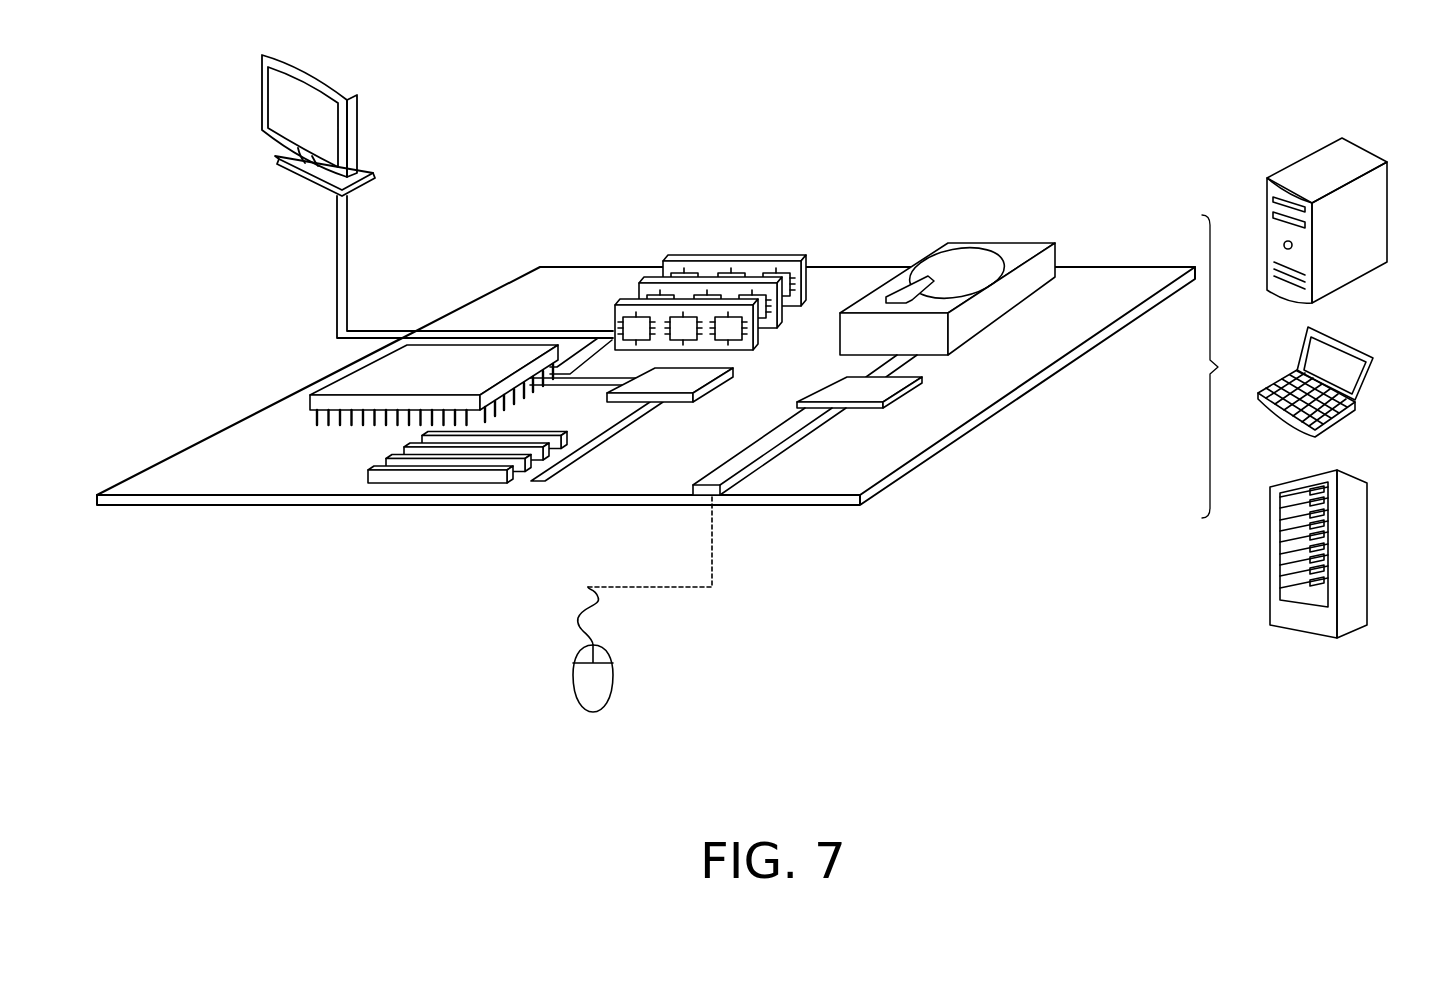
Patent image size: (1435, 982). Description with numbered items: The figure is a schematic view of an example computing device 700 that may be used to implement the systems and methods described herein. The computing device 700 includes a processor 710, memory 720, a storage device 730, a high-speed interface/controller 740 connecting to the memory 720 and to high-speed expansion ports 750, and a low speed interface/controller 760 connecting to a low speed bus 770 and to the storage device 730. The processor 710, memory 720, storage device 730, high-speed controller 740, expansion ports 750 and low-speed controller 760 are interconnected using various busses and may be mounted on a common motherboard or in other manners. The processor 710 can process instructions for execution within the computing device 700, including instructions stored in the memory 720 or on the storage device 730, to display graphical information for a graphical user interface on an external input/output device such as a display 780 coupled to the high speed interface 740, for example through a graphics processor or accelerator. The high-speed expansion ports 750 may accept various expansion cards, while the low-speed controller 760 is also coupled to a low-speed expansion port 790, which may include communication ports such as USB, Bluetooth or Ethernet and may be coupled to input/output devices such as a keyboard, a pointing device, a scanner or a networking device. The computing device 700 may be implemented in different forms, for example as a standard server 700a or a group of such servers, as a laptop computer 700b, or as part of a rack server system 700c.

The computing device 700 is at (816, 114).
The standard server 700a is at (1297, 157).
The laptop computer 700b is at (1349, 341).
The rack server system 700c is at (1361, 534).
The processor 710 is at (306, 396).
The memory 720 is at (728, 260).
The storage device 730 is at (997, 243).
The high-speed interface/controller 740 is at (678, 404).
The high-speed expansion ports 750 is at (370, 471).
The low speed interface/controller 760 is at (848, 388).
The low speed bus 770 is at (799, 446).
The display 780 is at (260, 102).
The low-speed expansion port 790 is at (720, 495).